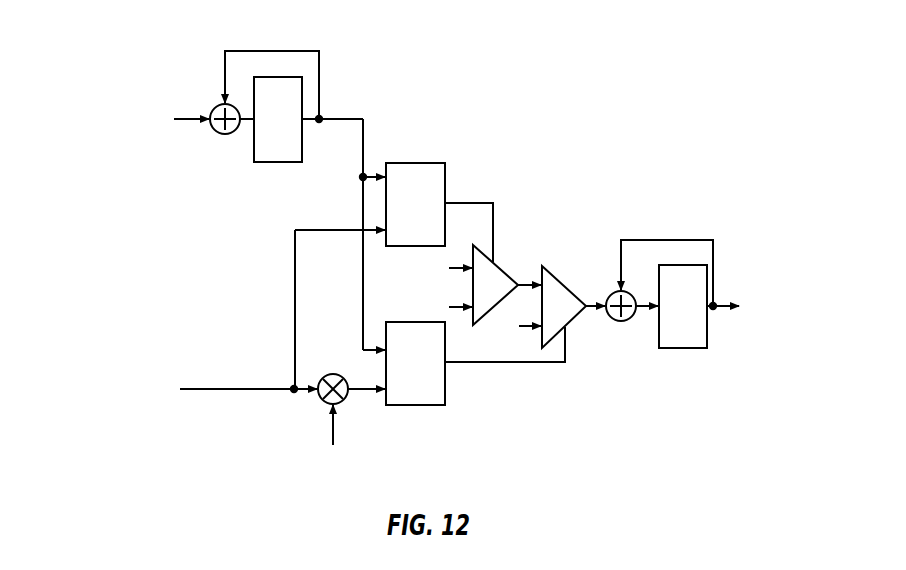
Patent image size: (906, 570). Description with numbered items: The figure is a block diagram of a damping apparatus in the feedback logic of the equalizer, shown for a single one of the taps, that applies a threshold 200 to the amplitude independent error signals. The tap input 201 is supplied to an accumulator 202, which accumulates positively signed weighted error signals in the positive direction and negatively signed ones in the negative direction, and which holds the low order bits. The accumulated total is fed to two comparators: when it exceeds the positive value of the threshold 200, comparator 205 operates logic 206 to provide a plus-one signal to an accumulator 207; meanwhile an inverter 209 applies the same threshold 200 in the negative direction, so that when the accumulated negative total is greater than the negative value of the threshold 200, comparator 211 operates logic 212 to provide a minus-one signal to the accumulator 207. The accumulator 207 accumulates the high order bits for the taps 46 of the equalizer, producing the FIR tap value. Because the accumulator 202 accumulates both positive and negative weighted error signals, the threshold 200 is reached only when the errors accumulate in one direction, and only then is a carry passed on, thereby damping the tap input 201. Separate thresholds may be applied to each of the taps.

The tap input 201 is at (180, 125).
The accumulator 202 is at (334, 70).
The comparator 205 is at (410, 163).
The logic 206 is at (502, 268).
The accumulator 207 is at (722, 257).
The taps 46 is at (718, 312).
The logic 212 is at (570, 323).
The comparator 211 is at (438, 405).
The inverter 209 is at (338, 408).
The threshold 200 is at (255, 393).